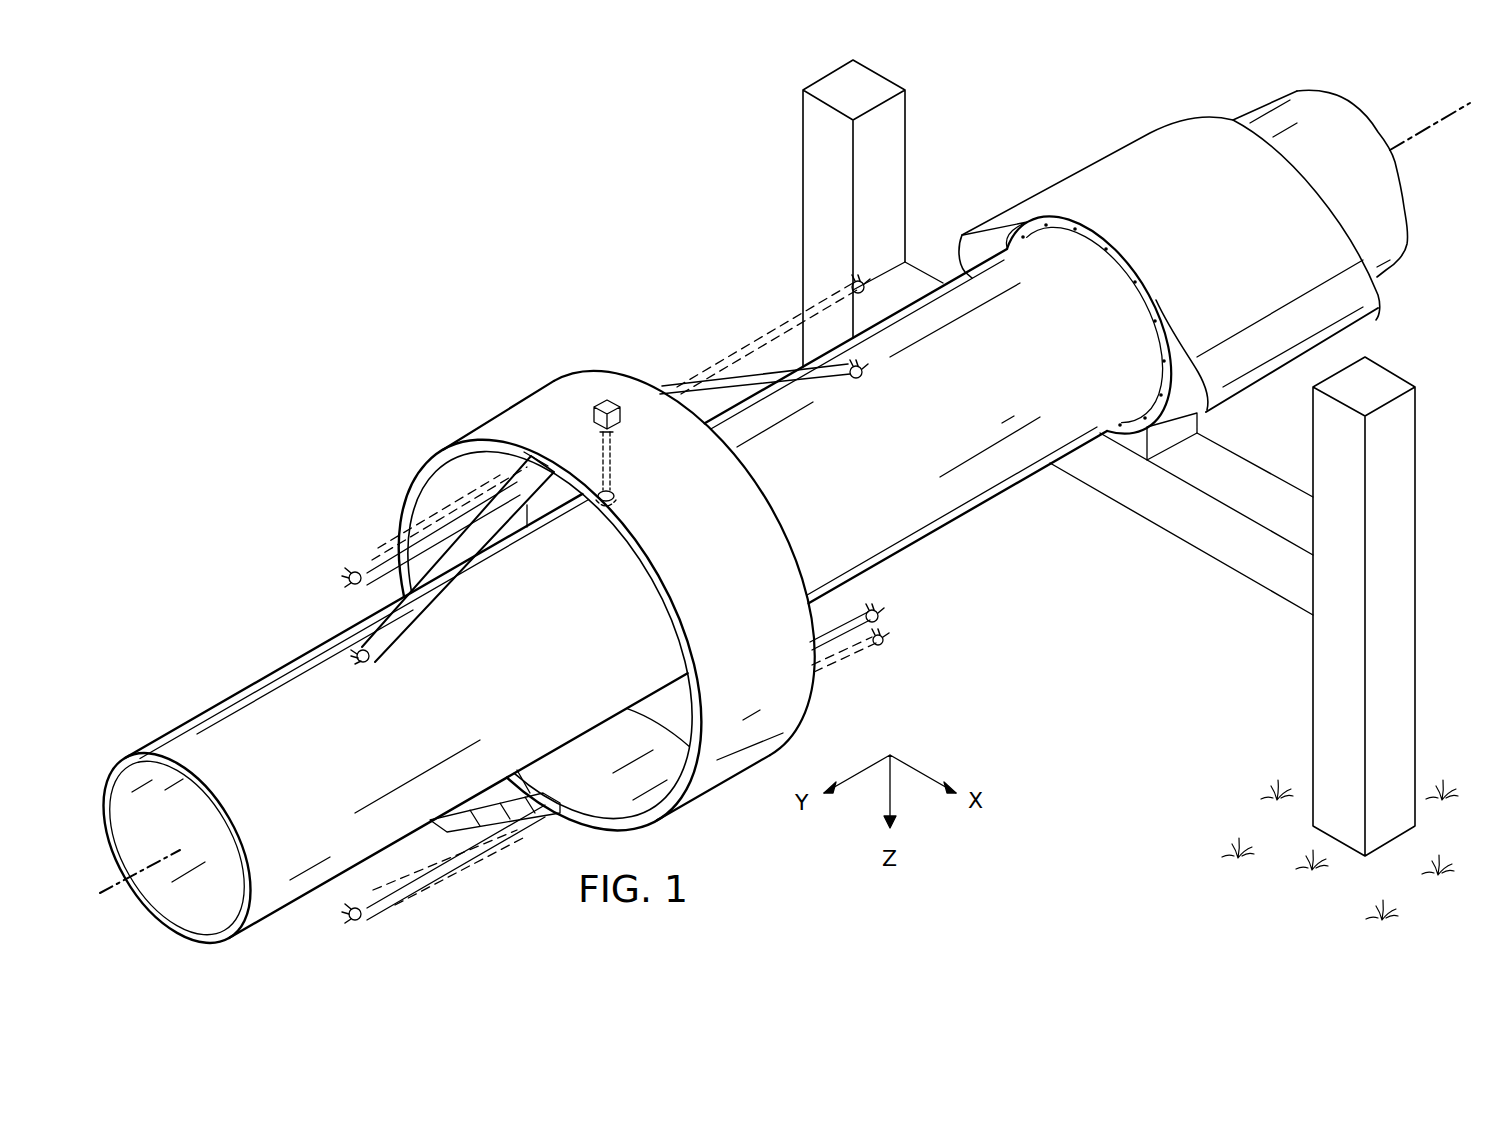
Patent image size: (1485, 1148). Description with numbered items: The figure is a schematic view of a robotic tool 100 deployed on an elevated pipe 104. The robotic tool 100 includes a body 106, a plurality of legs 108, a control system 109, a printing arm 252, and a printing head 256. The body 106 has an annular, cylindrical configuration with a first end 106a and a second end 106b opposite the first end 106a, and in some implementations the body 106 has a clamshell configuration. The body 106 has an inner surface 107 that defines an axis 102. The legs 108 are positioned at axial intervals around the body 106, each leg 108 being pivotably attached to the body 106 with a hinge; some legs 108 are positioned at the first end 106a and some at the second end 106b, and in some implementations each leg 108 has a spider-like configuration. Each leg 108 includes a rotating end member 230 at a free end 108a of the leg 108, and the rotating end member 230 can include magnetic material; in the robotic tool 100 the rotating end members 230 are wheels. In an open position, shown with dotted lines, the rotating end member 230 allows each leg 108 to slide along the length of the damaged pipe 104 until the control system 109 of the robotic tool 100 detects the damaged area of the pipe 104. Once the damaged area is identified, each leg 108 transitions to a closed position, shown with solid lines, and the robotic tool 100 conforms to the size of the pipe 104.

The robotic tool 100 is at (474, 396).
The axis 102 is at (113, 899).
The elevated pipe 104 is at (262, 690).
The body 106 is at (649, 601).
The first end 106a is at (663, 604).
The second end 106b is at (770, 497).
The inner surface 107 is at (630, 550).
The legs 108 is at (832, 392).
The free end 108a is at (862, 380).
The control system 109 is at (604, 398).
The rotating end member 230 is at (366, 666).
The printing arm 252 is at (618, 474).
The printing head 256 is at (630, 500).